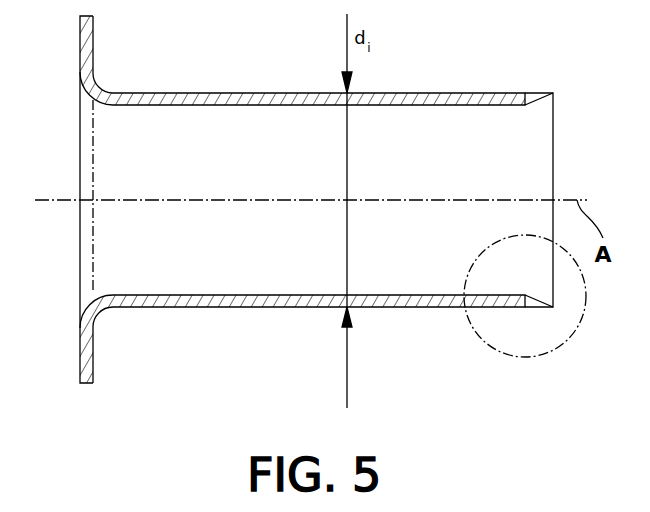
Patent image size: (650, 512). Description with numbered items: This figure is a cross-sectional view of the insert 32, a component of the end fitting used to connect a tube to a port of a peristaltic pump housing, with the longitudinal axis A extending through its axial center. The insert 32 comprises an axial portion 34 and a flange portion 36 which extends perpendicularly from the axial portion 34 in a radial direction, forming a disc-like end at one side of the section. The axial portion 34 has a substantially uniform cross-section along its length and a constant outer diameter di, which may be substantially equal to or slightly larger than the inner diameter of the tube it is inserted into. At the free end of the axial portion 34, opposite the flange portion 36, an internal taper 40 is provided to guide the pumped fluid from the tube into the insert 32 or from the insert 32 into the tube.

The insert 32 is at (193, 340).
The axial portion 34 is at (452, 93).
The flange portion 36 is at (82, 44).
The internal taper 40 is at (544, 99).